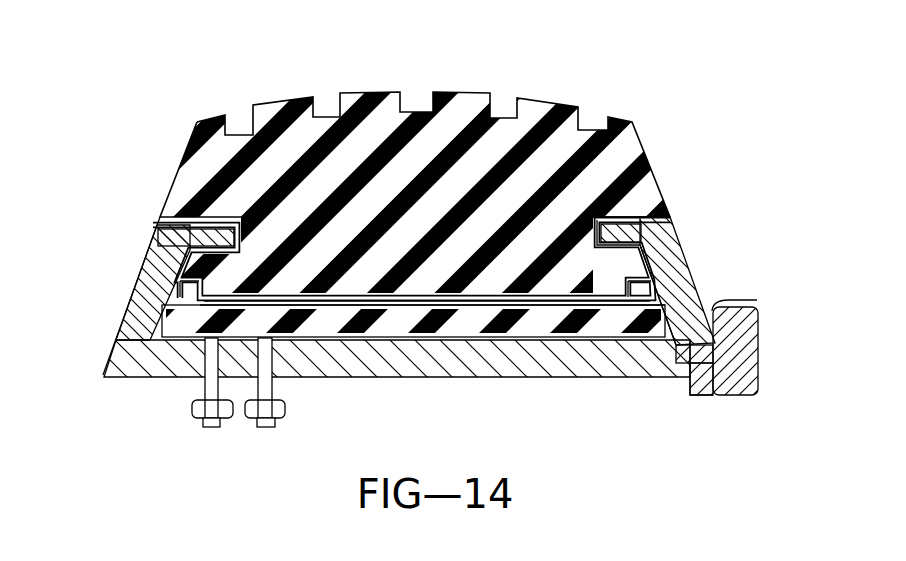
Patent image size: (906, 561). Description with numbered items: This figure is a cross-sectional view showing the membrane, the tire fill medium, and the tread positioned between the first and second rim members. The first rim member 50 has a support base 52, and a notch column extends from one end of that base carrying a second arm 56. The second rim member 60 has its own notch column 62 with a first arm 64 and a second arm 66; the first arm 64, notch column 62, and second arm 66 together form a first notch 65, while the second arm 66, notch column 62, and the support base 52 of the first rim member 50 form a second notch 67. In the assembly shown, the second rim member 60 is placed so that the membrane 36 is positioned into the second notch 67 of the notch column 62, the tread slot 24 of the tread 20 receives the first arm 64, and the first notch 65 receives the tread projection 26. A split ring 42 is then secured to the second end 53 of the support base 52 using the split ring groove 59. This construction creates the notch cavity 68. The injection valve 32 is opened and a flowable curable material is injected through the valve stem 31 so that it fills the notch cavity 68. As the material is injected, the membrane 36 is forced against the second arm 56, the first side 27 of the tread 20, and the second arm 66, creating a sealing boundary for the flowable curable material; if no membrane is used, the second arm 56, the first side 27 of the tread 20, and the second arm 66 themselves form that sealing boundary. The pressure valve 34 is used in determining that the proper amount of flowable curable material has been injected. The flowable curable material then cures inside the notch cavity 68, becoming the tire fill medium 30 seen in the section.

The tread 20 is at (382, 141).
The tread slot 24 is at (600, 220).
The tread projection 26 is at (633, 268).
The first side of the tread 27 is at (527, 296).
The tire fill medium 30 is at (607, 321).
The valve stem 31 is at (263, 353).
The injection valve 32 is at (278, 413).
The pressure valve 34 is at (197, 413).
The membrane 36 is at (555, 304).
The split ring 42 is at (733, 350).
The first rim member 50 is at (123, 373).
The support base 52 is at (458, 361).
The second end of the support base 53 is at (671, 378).
The second arm 56 is at (183, 290).
The split ring groove 59 is at (717, 367).
The second rim member 60 is at (700, 318).
The notch column 62 is at (677, 230).
The first arm 64 is at (621, 233).
The first notch 65 is at (667, 237).
The second arm 66 is at (647, 293).
The second notch 67 is at (660, 281).
The notch cavity 68 is at (410, 322).